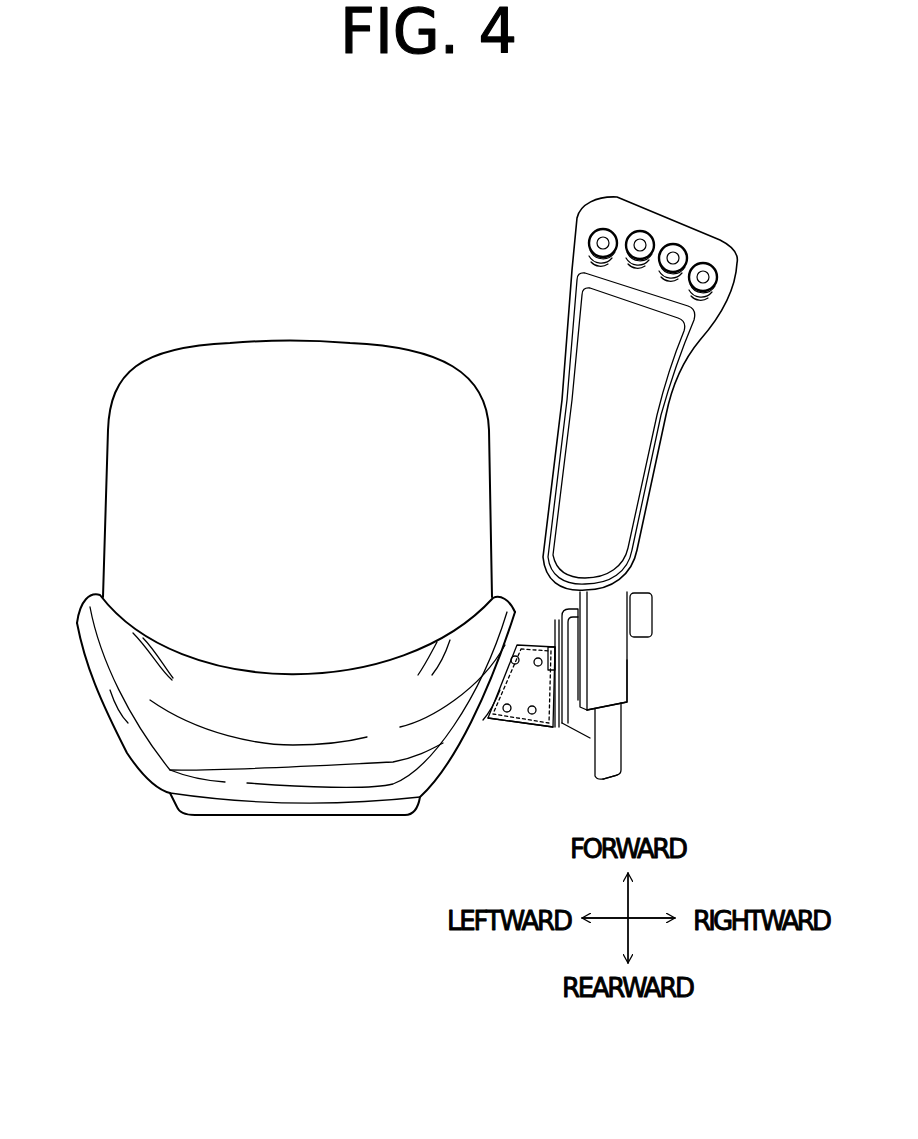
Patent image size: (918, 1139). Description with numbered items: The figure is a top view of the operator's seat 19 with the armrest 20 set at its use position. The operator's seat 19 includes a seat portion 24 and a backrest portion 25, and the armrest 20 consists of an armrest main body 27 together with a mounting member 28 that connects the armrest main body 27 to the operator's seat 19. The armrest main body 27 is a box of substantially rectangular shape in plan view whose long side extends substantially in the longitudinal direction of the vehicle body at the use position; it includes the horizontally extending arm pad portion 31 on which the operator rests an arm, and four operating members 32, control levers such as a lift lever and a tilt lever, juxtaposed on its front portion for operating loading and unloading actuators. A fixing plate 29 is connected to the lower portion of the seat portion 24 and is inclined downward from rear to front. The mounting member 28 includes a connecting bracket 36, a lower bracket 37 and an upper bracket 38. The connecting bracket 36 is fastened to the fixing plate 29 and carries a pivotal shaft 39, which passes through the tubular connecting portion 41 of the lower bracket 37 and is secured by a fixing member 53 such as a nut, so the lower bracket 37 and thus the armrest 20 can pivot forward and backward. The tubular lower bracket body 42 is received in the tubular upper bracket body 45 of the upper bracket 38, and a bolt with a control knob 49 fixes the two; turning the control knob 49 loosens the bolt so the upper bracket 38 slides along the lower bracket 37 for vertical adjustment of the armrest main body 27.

The operator's seat 19 is at (186, 314).
The armrest 20 is at (504, 240).
The seat portion 24 is at (343, 360).
The backrest portion 25 is at (160, 770).
The armrest main body 27 is at (708, 302).
The mounting member 28 is at (690, 740).
The fixing plate 29 is at (505, 724).
The arm pad portion 31 is at (645, 421).
The operating members 32 is at (698, 260).
The connecting bracket 36 is at (551, 737).
The lower bracket 37 is at (624, 759).
The upper bracket 38 is at (628, 683).
The pivotal shaft 39 is at (547, 648).
The connecting portion 41 is at (573, 720).
The lower bracket body 42 is at (606, 776).
The upper bracket body 45 is at (615, 661).
The control knob 49 is at (653, 620).
The fixing member 53 is at (557, 624).